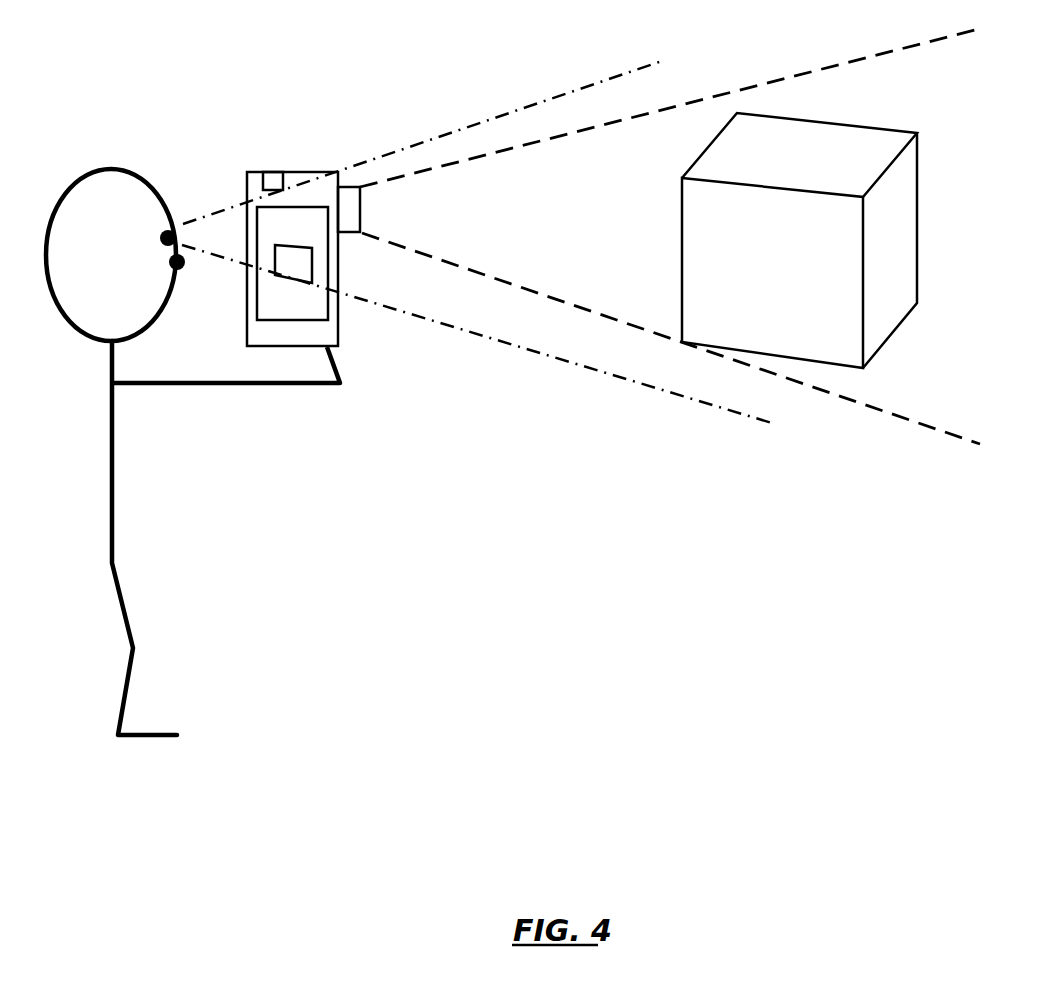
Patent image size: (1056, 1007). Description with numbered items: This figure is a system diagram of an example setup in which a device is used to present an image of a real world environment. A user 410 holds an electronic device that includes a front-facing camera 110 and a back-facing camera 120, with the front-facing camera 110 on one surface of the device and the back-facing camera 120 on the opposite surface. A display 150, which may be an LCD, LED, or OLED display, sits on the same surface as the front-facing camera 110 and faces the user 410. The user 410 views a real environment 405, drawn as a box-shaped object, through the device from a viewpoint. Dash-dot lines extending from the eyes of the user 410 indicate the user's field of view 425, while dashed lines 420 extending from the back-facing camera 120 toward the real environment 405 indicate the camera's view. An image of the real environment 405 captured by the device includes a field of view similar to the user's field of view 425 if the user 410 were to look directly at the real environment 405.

The front-facing camera 110 is at (273, 172).
The back-facing camera 120 is at (360, 210).
The display 150 is at (293, 320).
The real environment 405 is at (870, 200).
The user 410 is at (112, 168).
The camera field of view 420 is at (875, 405).
The user's field of view 425 is at (450, 137).